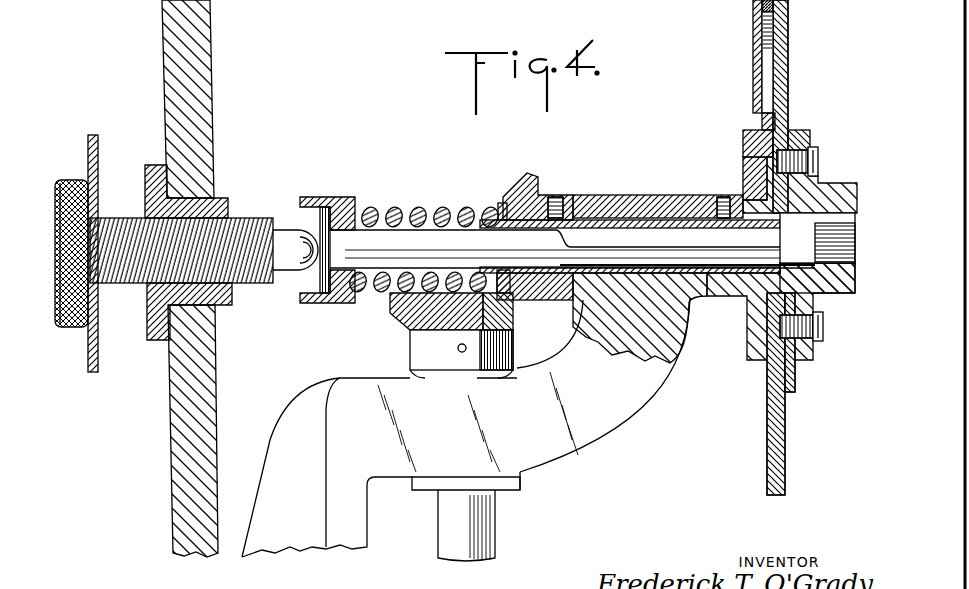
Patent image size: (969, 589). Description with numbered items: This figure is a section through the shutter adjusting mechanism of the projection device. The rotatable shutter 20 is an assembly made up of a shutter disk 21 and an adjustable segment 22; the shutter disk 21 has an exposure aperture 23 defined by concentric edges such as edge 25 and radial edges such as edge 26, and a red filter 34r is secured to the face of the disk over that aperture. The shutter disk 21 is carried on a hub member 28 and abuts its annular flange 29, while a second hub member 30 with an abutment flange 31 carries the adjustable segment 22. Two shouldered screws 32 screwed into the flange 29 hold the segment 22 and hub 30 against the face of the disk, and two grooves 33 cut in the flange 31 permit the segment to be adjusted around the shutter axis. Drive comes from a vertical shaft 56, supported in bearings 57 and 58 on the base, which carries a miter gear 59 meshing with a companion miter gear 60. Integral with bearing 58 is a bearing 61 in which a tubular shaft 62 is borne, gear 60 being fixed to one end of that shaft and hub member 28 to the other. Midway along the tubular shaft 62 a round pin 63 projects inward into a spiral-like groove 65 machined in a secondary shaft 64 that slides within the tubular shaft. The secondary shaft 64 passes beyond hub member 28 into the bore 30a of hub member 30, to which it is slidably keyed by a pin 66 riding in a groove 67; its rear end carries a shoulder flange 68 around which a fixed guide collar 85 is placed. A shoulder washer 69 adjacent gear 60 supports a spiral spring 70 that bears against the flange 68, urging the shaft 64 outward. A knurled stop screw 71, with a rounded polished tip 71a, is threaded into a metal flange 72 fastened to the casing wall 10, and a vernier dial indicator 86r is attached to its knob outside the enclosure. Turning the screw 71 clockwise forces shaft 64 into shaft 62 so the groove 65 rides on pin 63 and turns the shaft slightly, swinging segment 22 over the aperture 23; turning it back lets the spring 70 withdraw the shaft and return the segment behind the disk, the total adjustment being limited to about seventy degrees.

The enclosing casing 10 is at (165, 55).
The rotatable shutter 20 is at (775, 125).
The shutter disk 21 is at (767, 420).
The adjustable segment 22 is at (780, 30).
The exposure aperture 23 is at (762, 53).
The concentric edge 25 is at (763, 100).
The radial edge 26 is at (762, 13).
The hub member 28 is at (730, 193).
The annular flange 29 is at (743, 142).
The second hub member 30 is at (847, 193).
The bore 30a is at (855, 267).
The abutment flange 31 is at (810, 133).
The shouldered screw 32 is at (805, 155).
The groove 33 is at (805, 175).
The red filter 34r is at (760, 38).
The vertical shaft 56 is at (453, 530).
The bearing 57 is at (310, 530).
The bearing 58 is at (503, 482).
The miter gear 59 is at (393, 315).
The miter gear 60 is at (540, 195).
The bearing 61 is at (600, 200).
The tubular shaft 62 is at (627, 222).
The round pin 63 is at (690, 307).
The secondary shaft 64 is at (568, 242).
The spiral-like groove 65 is at (697, 268).
The pin 66 is at (800, 220).
The groove 67 is at (847, 213).
The shoulder flange 68 is at (352, 200).
The shoulder washer 69 is at (502, 203).
The spiral spring 70 is at (394, 207).
The knurled stop screw 71 is at (217, 237).
The tip 71a is at (300, 243).
The threaded metal flange 72 is at (148, 166).
The guide collar 85 is at (322, 200).
The vernier dial indicator 86r is at (88, 163).